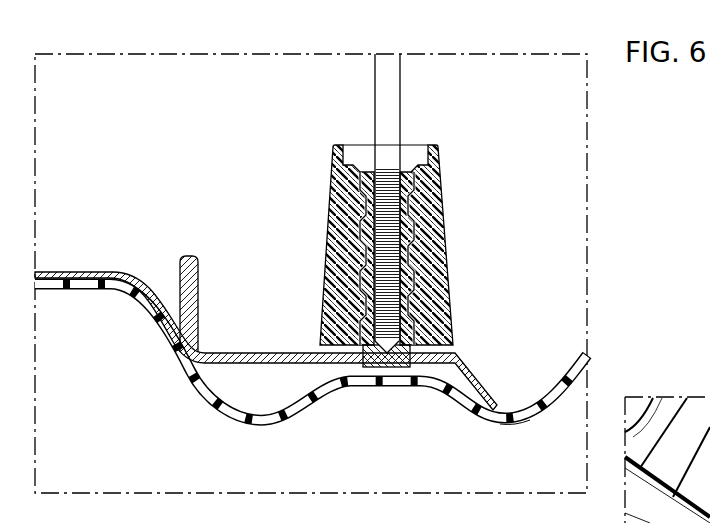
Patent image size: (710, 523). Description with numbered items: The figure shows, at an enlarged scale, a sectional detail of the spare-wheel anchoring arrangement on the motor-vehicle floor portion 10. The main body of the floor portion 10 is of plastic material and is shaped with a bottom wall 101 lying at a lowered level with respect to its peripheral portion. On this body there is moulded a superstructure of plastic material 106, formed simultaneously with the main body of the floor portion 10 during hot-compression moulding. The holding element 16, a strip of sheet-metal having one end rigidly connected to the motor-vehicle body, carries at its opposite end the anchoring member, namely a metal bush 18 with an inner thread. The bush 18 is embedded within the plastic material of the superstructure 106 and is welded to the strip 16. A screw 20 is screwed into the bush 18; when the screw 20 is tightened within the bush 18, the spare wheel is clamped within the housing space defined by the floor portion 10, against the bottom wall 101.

The floor portion 10 is at (199, 399).
The holding element 16 is at (253, 348).
The metal bush 18 is at (397, 368).
The screw 20 is at (412, 110).
The bottom wall 101 is at (517, 408).
The superstructure of plastic material 106 is at (458, 310).